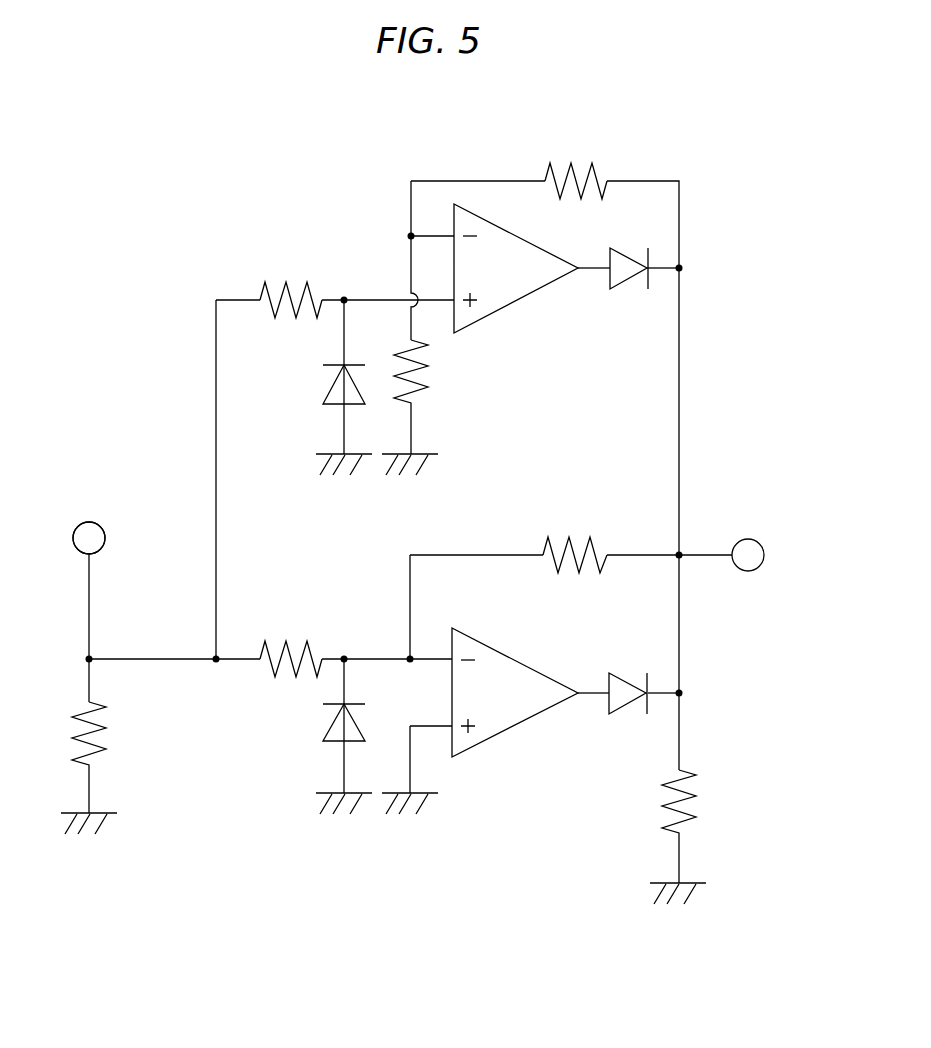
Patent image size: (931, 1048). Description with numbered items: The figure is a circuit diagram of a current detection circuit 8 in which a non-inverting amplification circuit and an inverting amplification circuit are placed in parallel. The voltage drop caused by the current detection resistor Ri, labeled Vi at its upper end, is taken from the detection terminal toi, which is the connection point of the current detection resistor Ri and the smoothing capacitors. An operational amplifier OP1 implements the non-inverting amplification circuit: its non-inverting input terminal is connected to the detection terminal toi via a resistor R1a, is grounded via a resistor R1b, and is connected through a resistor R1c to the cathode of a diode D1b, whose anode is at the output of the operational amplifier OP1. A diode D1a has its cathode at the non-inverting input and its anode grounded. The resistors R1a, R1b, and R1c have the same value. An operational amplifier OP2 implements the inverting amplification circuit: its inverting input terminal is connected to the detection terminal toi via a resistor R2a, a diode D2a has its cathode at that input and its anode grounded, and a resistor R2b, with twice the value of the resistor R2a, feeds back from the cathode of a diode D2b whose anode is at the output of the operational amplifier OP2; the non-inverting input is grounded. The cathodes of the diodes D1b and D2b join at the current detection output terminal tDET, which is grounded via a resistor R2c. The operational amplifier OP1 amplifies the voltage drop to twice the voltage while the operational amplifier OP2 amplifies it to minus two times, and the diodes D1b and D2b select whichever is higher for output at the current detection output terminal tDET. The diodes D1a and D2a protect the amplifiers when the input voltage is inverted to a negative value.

The current detection circuit 8 is at (148, 195).
The resistor R1a is at (291, 288).
The resistor R1b is at (436, 397).
The resistor R1c is at (576, 169).
The diode D1a is at (322, 377).
The diode D1b is at (629, 285).
The operational amplifier OP1 is at (516, 268).
The resistor R2a is at (291, 646).
The resistor R2b is at (575, 542).
The resistor R2c is at (701, 826).
The diode D2a is at (322, 726).
The diode D2b is at (628, 712).
The operational amplifier OP2 is at (515, 692).
The current detection resistor Ri is at (73, 757).
The input voltage Vi is at (89, 525).
The detection terminal toi is at (106, 538).
The current detection output terminal tDET is at (786, 525).